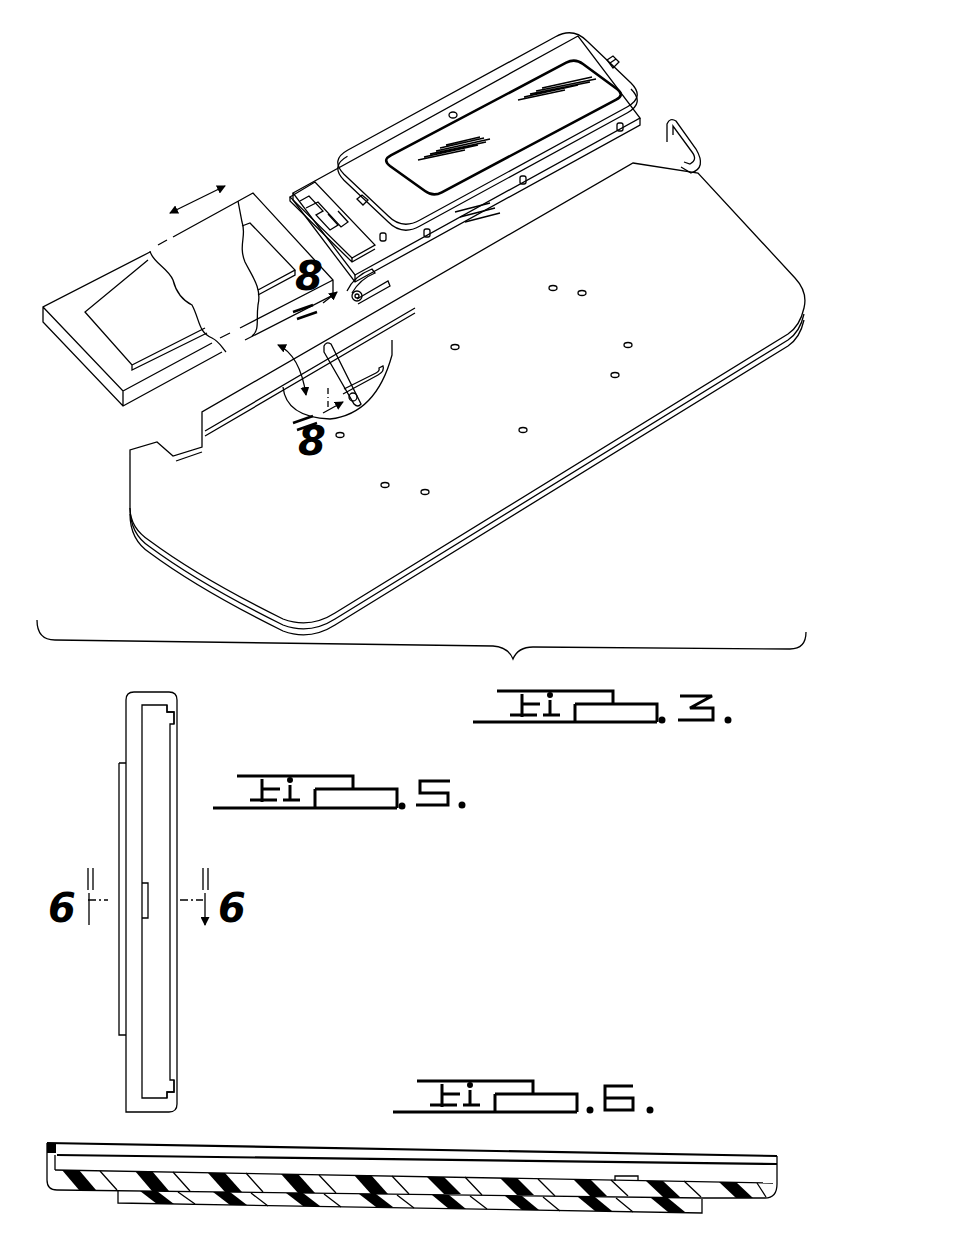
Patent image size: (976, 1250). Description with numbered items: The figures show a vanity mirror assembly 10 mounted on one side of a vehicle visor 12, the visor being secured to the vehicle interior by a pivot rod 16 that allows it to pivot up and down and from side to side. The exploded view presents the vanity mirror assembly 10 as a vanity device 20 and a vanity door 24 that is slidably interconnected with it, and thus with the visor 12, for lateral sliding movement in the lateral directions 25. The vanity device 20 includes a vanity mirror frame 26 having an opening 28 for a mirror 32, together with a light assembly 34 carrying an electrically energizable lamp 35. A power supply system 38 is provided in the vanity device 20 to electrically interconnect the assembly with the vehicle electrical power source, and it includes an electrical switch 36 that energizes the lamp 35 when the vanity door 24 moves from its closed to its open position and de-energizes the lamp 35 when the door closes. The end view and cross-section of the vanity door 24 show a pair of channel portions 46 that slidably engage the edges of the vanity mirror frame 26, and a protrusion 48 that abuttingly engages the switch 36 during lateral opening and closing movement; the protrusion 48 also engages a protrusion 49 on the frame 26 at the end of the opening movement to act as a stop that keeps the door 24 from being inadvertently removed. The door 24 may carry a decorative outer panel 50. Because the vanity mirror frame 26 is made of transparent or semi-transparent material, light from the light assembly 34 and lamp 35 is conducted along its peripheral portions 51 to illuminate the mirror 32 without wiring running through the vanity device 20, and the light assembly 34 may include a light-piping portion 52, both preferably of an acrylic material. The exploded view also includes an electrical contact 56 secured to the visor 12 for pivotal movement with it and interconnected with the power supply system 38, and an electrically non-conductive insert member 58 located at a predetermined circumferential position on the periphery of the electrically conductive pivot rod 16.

In FIG. 3, the vanity mirror assembly 10 is at (133, 187).
In FIG. 3, the vehicle visor 12 is at (725, 238).
In FIG. 3, the pivot rod 16 is at (698, 143).
In FIG. 3, the vanity device 20 is at (643, 117).
In FIG. 3, the vanity door 24 is at (97, 378).
In FIG. 5, the vanity door 24 is at (125, 708).
In FIG. 6, the vanity door 24 is at (44, 1145).
In FIG. 3, the lateral directions 25 is at (187, 207).
In FIG. 3, the vanity mirror frame 26 is at (382, 126).
In FIG. 3, the opening 28 is at (451, 112).
In FIG. 3, the mirror 32 is at (525, 93).
In FIG. 3, the light assembly 34 is at (291, 195).
In FIG. 3, the lamp 35 is at (376, 282).
In FIG. 3, the electrical switch 36 is at (620, 62).
In FIG. 3, the power supply system 38 is at (390, 291).
In FIG. 5, the channel portions 46 is at (162, 712).
In FIG. 6, the channel portions 46 is at (203, 1163).
In FIG. 5, the protrusion 48 is at (148, 887).
In FIG. 6, the protrusion 48 is at (628, 1180).
In FIG. 3, the protrusion 49 is at (360, 195).
In FIG. 6, the decorative outer panel 50 is at (264, 1193).
In FIG. 3, the peripheral portions 51 is at (347, 160).
In FIG. 3, the light-piping portion 52 is at (350, 230).
In FIG. 3, the electrical contact 56 is at (362, 356).
In FIG. 3, the insert member 58 is at (316, 358).